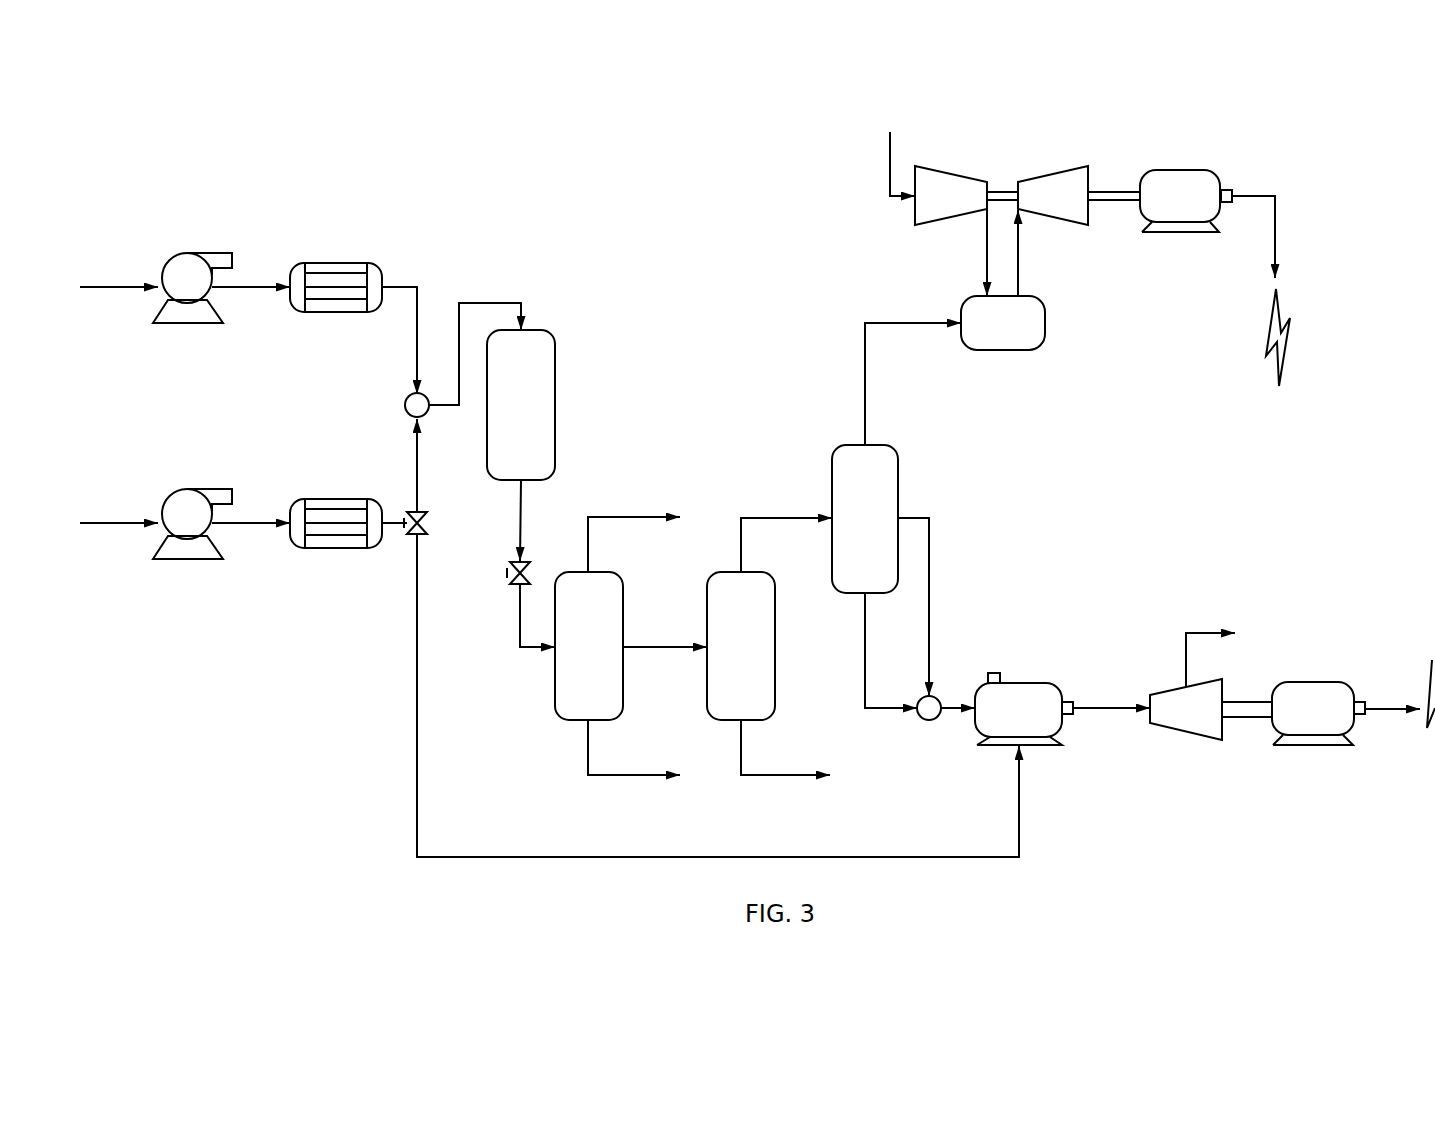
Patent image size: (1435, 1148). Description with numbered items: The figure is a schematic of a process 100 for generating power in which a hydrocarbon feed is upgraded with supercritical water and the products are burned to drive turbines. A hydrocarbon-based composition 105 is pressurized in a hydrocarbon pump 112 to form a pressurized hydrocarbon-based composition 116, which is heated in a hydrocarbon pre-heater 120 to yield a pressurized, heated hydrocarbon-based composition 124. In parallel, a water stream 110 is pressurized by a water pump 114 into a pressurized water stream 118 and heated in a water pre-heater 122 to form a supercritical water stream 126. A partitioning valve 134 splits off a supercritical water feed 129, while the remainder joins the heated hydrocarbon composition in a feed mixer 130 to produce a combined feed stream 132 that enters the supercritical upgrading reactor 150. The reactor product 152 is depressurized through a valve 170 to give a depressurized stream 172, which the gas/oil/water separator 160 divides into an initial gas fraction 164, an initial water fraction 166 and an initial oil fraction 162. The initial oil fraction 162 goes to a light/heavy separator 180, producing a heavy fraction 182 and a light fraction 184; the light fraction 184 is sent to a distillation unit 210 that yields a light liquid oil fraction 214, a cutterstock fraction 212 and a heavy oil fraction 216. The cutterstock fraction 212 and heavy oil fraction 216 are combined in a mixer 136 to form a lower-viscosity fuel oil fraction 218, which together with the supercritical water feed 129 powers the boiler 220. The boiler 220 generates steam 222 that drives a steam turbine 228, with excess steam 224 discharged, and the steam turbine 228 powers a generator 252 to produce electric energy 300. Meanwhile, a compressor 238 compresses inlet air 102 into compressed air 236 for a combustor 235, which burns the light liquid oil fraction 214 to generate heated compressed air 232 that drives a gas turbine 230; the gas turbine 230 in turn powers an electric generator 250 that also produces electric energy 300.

The process 100 is at (1326, 148).
The inlet air 102 is at (890, 132).
The hydrocarbon-based composition 105 is at (132, 287).
The water stream 110 is at (132, 523).
The hydrocarbon pump 112 is at (202, 253).
The water pump 114 is at (204, 489).
The pressurized hydrocarbon-based composition 116 is at (246, 287).
The pressurized water stream 118 is at (246, 523).
The hydrocarbon pre-heater 120 is at (333, 263).
The water pre-heater 122 is at (322, 499).
The pressurized, heated hydrocarbon-based composition 124 is at (398, 287).
The supercritical water stream 126 is at (416, 452).
The supercritical water feed 129 is at (640, 857).
The feed mixer 130 is at (405, 405).
The combined feed stream 132 is at (477, 303).
The partitioning valve 134 is at (407, 537).
The mixer 136 is at (929, 721).
The supercritical upgrading reactor 150 is at (555, 403).
The reactor product 152 is at (520, 513).
The gas/oil/water separator 160 is at (623, 606).
The initial oil fraction 162 is at (660, 650).
The initial gas fraction 164 is at (620, 517).
The initial water fraction 166 is at (588, 745).
The valve 170 is at (512, 588).
The depressurized stream 172 is at (527, 650).
The light/heavy separator 180 is at (775, 633).
The heavy fraction 182 is at (758, 777).
The light fraction 184 is at (772, 518).
The distillation unit 210 is at (898, 473).
The cutterstock fraction 212 is at (929, 545).
The light liquid oil fraction 214 is at (890, 323).
The heavy oil fraction 216 is at (865, 655).
The fuel oil fraction 218 is at (952, 706).
The boiler 220 is at (1020, 683).
The steam 222 is at (1112, 710).
The excess steam 224 is at (1205, 633).
The steam turbine 228 is at (1180, 731).
The gas turbine 230 is at (1050, 182).
The heated compressed air 232 is at (1018, 258).
The combustor 235 is at (1000, 350).
The compressed air 236 is at (987, 246).
The compressor 238 is at (935, 166).
The electric generator 250 is at (1180, 170).
The generator 252 is at (1316, 682).
The electric energy 300 is at (1433, 672).